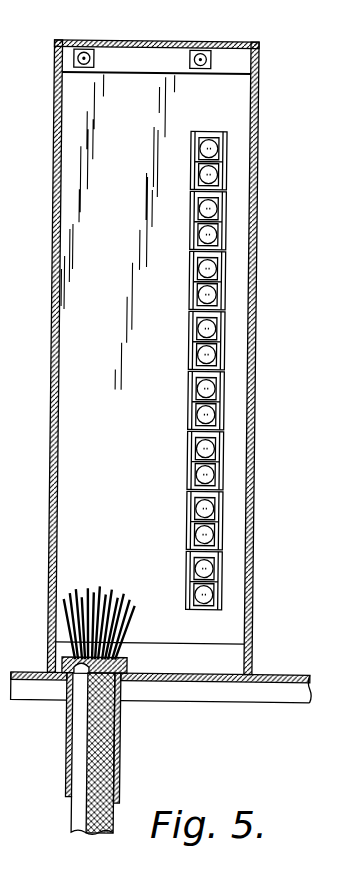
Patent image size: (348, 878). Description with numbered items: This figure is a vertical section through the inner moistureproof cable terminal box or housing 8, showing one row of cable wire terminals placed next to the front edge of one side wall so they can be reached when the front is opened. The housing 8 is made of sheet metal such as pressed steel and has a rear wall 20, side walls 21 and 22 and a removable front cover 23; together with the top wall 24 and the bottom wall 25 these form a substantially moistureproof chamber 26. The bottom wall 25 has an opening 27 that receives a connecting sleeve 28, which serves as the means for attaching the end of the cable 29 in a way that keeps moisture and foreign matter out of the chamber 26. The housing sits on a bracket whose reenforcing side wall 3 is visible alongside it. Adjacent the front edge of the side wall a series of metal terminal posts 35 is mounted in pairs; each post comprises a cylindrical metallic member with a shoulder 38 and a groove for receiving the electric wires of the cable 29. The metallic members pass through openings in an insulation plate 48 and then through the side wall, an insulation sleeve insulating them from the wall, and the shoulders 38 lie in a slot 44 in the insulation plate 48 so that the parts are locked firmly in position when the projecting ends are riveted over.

The reenforcing side wall 3 is at (265, 102).
The cable terminal box or housing 8 is at (50, 76).
The rear wall 20 is at (50, 155).
The side wall 21 is at (73, 223).
The side wall 22 is at (36, 672).
The removable front cover 23 is at (256, 180).
The top wall 24 is at (148, 41).
The bottom wall 25 is at (147, 666).
The moistureproof chamber 26 is at (110, 228).
The opening 27 is at (127, 684).
The connecting sleeve 28 is at (124, 778).
The cable 29 is at (88, 814).
The metal terminal posts 35 is at (220, 268).
The shoulder 38 is at (187, 341).
The slot 44 is at (188, 320).
The insulation plate 48 is at (188, 285).